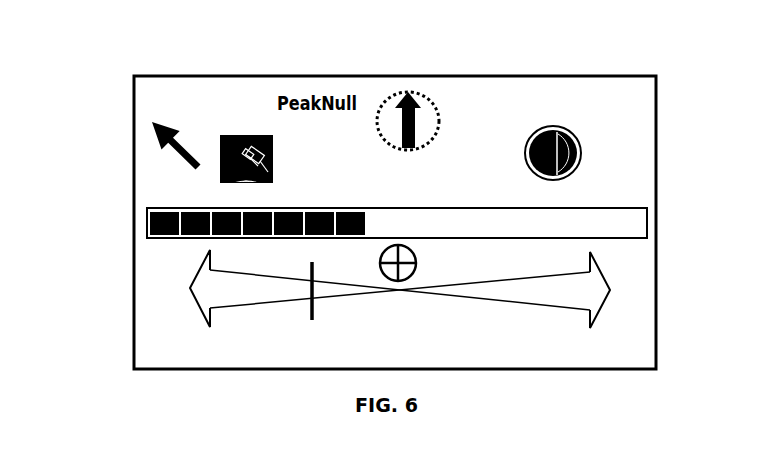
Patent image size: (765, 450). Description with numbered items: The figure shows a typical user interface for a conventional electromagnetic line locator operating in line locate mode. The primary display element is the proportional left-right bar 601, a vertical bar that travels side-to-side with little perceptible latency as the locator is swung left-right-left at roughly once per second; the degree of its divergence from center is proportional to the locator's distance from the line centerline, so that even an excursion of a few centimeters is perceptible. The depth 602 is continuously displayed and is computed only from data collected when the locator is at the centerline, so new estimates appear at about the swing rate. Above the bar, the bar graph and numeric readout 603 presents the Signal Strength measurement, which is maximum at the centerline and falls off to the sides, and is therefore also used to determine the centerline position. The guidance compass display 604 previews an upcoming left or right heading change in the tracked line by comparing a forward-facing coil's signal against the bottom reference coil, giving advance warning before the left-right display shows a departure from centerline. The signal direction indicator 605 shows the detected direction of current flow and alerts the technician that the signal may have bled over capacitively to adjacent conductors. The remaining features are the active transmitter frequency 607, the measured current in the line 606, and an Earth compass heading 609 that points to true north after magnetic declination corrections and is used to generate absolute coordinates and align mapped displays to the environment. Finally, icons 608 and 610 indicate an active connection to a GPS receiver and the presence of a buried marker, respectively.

The proportional left-right bar 601 is at (310, 310).
The depth 602 is at (432, 328).
The bar graph and numeric readout 603 is at (445, 148).
The guidance compass display 604 is at (420, 92).
The signal direction indicator 605 is at (428, 258).
The measured current in the line 606 is at (592, 82).
The active transmitter frequency 607 is at (175, 83).
The GPS receiver connection icon 608 is at (237, 137).
The Earth compass heading 609 is at (153, 150).
The buried marker icon 610 is at (582, 152).